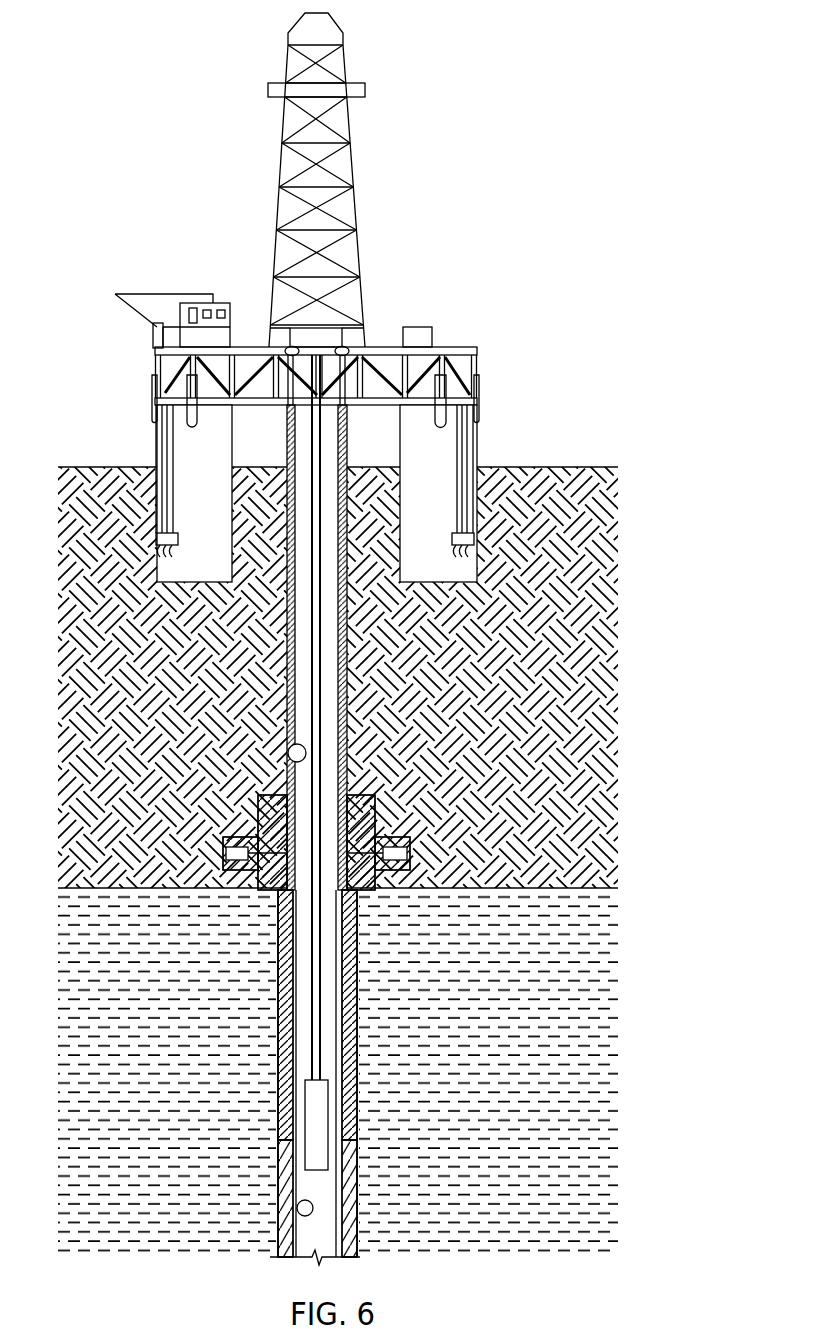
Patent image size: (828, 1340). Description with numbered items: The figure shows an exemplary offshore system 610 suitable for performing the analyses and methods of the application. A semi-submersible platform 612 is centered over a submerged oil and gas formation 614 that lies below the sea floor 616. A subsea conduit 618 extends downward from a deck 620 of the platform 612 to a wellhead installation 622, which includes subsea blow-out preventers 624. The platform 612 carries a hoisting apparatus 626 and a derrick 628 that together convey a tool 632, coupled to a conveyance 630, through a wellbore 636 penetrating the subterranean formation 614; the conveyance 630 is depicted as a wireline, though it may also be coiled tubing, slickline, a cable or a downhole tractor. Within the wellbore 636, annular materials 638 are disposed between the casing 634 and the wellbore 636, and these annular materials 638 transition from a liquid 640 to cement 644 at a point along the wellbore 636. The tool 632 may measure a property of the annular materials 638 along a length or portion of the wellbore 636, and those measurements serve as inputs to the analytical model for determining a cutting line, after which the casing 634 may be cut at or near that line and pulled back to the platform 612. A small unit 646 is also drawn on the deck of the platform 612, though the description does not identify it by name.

The system 610 is at (153, 152).
The semi-submersible platform 612 is at (478, 352).
The submerged oil and gas formation 614 is at (190, 1078).
The sea floor 616 is at (612, 902).
The subsea conduit 618 is at (290, 678).
The deck 620 is at (480, 415).
The wellhead installation 622 is at (372, 815).
The subsea blow-out preventers 624 is at (410, 855).
The hoisting apparatus 626 is at (303, 333).
The derrick 628 is at (345, 72).
The conveyance 630 is at (322, 625).
The tool 632 is at (335, 1172).
The casing 634 is at (289, 757).
The wellbore 636 is at (348, 755).
The annular materials 638 is at (360, 935).
The liquid 640 is at (360, 935).
The cement 644 is at (355, 1215).
The control unit 646 is at (413, 327).